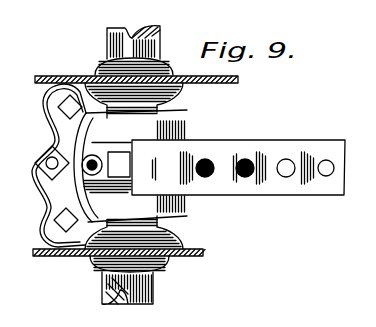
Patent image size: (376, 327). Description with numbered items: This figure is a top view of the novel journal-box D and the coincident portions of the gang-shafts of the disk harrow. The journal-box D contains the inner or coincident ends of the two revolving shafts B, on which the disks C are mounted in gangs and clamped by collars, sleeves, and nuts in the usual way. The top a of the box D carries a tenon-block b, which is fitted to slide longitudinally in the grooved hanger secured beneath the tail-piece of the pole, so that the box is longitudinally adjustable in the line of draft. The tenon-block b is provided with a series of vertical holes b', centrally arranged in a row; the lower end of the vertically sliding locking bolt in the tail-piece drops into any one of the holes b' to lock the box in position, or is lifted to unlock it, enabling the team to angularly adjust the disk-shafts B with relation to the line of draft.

The revolving shaft B is at (135, 152).
The disk C is at (135, 175).
The journal-box D is at (51, 165).
The top of the box a is at (130, 166).
The tenon-block b is at (238, 167).
The vertical holes b' is at (265, 171).